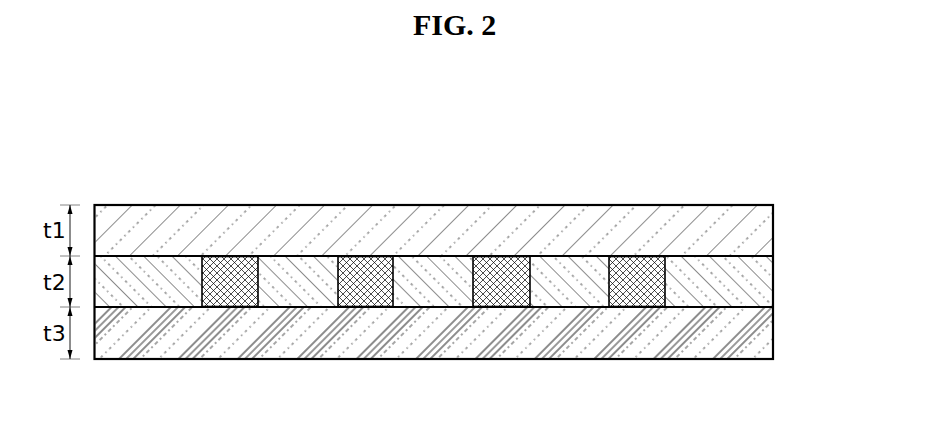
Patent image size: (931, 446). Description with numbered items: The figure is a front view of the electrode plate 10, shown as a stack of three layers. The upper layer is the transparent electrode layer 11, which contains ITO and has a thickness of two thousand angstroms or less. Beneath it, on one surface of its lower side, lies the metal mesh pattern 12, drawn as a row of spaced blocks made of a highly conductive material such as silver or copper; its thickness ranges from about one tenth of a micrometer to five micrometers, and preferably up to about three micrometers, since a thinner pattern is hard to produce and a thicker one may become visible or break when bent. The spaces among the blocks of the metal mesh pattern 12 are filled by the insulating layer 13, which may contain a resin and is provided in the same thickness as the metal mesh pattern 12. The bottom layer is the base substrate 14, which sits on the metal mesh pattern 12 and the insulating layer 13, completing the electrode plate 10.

The electrode plate 10 is at (232, 183).
The transparent electrode layer 11 is at (773, 228).
The metal mesh pattern 12 is at (640, 300).
The insulating layer 13 is at (773, 278).
The base substrate 14 is at (773, 333).